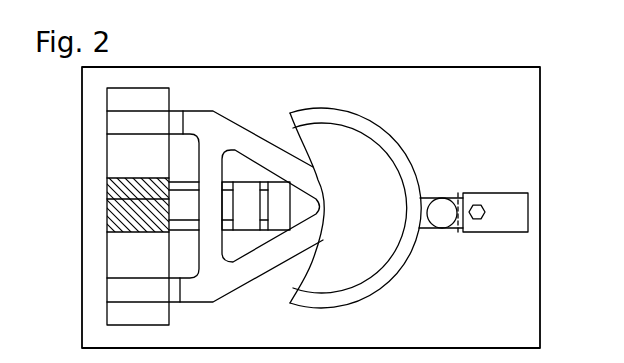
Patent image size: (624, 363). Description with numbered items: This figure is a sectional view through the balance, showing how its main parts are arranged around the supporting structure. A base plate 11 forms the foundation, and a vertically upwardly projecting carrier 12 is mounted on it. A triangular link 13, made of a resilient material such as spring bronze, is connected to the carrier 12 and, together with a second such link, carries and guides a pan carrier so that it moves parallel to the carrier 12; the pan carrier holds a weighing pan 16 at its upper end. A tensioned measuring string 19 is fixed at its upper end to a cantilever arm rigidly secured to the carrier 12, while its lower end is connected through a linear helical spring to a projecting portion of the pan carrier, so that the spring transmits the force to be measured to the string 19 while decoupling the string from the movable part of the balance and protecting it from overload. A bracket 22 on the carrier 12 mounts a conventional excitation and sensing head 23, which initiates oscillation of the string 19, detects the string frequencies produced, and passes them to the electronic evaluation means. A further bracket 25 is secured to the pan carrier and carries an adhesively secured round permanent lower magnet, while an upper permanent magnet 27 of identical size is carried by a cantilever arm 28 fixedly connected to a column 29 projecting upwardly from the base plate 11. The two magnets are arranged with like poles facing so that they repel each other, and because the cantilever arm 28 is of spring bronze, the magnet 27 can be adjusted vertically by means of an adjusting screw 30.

The base plate 11 is at (300, 81).
The carrier 12 is at (105, 199).
The triangular link 13 is at (230, 130).
The weighing pan 16 is at (372, 148).
The measuring string 19 is at (268, 213).
The bracket 22 is at (186, 217).
The excitation and sensing head 23 is at (284, 200).
The bracket 25 is at (425, 218).
The upper permanent magnet 27 is at (447, 226).
The cantilever arm 28 is at (456, 210).
The column 29 is at (506, 233).
The adjusting screw 30 is at (478, 212).